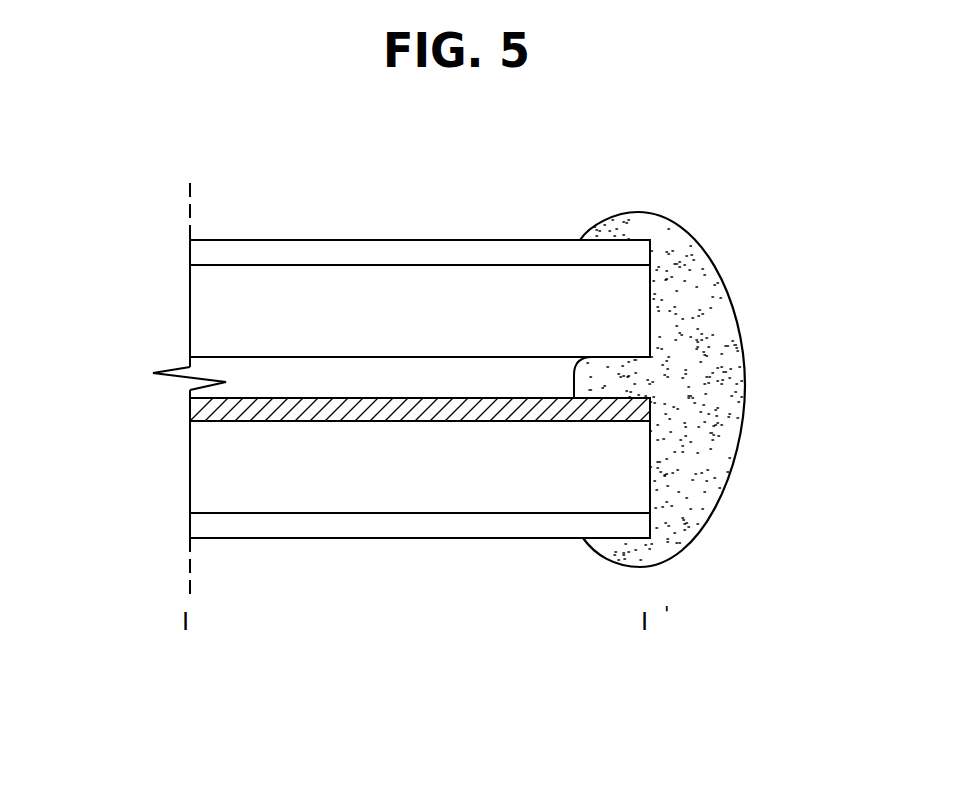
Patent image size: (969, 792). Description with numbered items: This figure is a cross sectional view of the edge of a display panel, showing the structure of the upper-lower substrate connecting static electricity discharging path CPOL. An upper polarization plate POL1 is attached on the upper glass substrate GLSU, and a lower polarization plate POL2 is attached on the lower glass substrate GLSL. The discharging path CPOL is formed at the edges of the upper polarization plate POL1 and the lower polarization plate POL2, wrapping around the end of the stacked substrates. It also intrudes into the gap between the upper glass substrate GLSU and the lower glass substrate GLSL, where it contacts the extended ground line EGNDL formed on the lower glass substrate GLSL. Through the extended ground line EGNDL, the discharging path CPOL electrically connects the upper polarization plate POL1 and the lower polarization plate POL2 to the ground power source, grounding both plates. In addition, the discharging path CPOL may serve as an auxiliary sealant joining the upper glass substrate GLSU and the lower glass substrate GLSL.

The upper polarization plate POL1 is at (207, 253).
The upper glass substrate GLSU is at (207, 310).
The extended ground line EGNDL is at (207, 408).
The lower glass substrate GLSL is at (207, 468).
The lower polarization plate POL2 is at (207, 527).
The upper-lower substrate connecting static electricity discharging path CPOL is at (743, 375).